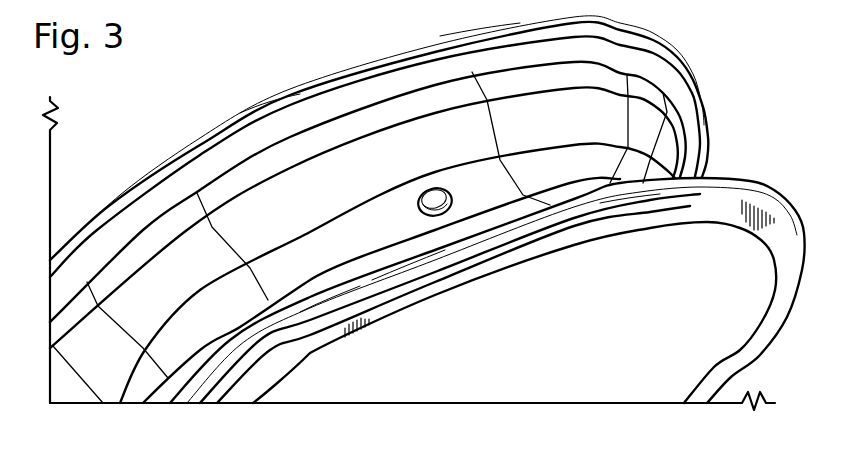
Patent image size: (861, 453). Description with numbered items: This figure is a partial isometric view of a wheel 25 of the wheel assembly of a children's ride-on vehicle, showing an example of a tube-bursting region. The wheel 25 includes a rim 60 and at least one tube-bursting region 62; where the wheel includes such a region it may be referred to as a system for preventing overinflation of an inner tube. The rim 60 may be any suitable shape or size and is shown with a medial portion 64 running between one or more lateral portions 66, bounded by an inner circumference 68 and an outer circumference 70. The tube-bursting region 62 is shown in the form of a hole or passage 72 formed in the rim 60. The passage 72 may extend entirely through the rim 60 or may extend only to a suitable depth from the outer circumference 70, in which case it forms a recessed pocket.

The wheel 25 is at (752, 68).
The rim 60 is at (776, 298).
The tube-bursting region 62 is at (453, 186).
The medial portion 64 is at (352, 248).
The lateral portion 66 is at (258, 200).
The inner circumference 68 is at (711, 226).
The outer circumference 70 is at (777, 190).
The passage 72 is at (433, 195).